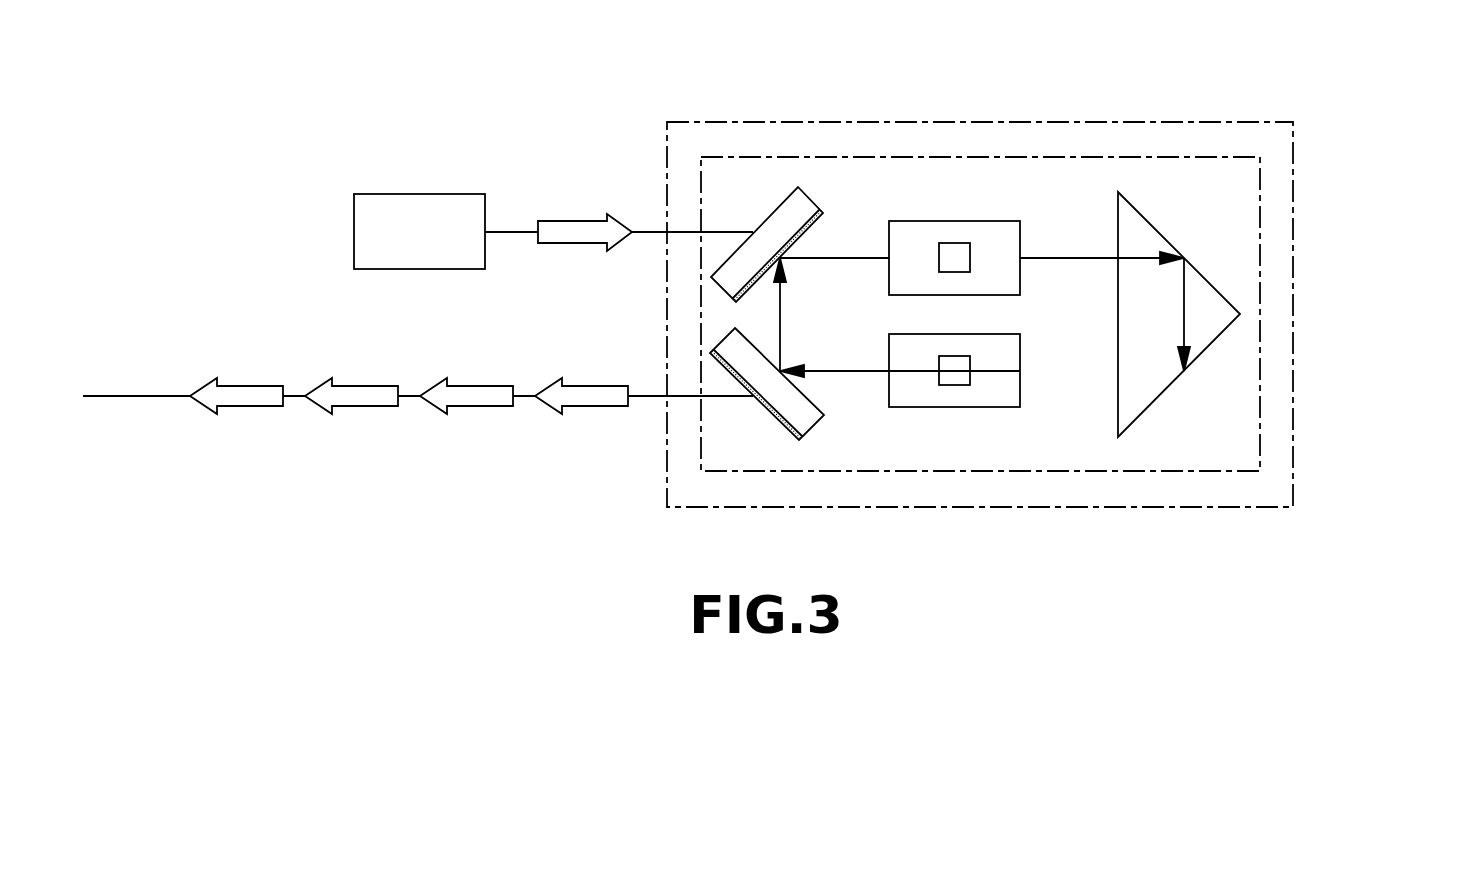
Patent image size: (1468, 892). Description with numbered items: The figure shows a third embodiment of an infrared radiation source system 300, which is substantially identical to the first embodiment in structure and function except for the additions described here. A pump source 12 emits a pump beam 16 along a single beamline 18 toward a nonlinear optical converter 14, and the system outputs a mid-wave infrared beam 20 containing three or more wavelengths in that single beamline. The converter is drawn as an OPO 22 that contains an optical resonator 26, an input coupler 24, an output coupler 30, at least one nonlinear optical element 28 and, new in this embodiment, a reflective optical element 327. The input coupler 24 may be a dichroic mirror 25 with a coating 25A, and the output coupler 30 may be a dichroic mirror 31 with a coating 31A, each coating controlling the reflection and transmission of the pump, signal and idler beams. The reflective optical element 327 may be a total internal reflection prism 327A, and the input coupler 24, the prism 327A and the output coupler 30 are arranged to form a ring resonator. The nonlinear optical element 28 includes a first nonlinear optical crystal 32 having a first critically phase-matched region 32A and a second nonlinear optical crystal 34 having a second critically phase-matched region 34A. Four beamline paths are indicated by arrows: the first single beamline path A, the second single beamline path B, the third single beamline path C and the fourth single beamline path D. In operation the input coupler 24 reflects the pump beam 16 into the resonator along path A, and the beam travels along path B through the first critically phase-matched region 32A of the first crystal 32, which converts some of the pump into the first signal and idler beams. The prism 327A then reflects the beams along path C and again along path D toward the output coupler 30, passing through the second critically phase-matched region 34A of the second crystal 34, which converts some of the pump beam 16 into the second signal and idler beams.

The infrared radiation source system 300 is at (504, 89).
The pump source 12 is at (416, 194).
The pump beam 16 is at (511, 233).
The single beamline 18 is at (418, 394).
The mid-wave infrared beam 20 is at (650, 399).
The nonlinear optical converter 14 is at (1057, 314).
The OPO 22 is at (1300, 187).
The optical resonator 26 is at (1268, 229).
The input coupler 24 is at (694, 249).
The dichroic mirror 25 is at (694, 249).
The coating 25A is at (741, 291).
The output coupler 30 is at (725, 443).
The dichroic mirror 31 is at (725, 443).
The coating 31A is at (722, 368).
The nonlinear optical element 28 is at (991, 316).
The first nonlinear optical crystal 32 is at (991, 235).
The first critically phase-matched region 32A is at (952, 248).
The second nonlinear optical crystal 34 is at (991, 395).
The second critically phase-matched region 34A is at (953, 380).
The reflective optical element 327 is at (1130, 246).
The total internal reflection prism 327A is at (1130, 246).
The first single beamline path A is at (780, 330).
The second single beamline path B is at (848, 258).
The third single beamline path C is at (1183, 312).
The fourth single beamline path D is at (1067, 371).